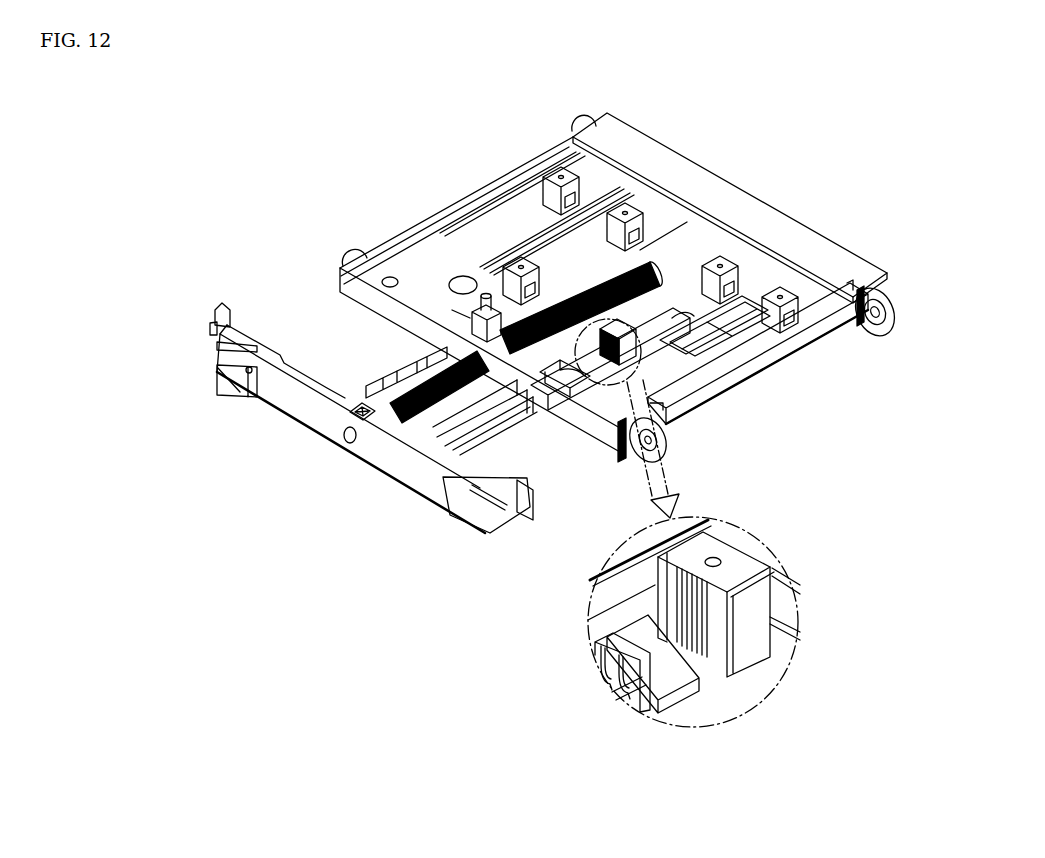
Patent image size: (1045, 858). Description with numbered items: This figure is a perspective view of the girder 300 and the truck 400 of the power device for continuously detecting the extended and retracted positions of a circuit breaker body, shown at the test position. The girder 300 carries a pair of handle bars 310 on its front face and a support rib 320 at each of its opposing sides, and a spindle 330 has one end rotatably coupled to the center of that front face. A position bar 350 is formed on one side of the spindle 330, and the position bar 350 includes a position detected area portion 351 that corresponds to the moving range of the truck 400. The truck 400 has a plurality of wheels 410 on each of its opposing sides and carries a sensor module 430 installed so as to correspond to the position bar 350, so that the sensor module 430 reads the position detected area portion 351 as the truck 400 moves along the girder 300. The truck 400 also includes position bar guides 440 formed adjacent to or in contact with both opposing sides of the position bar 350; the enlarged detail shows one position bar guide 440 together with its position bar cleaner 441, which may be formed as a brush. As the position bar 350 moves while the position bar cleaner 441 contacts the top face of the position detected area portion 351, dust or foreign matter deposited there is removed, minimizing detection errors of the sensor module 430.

The girder 300 is at (290, 402).
The handle bar 310 is at (222, 356).
The support rib 320 is at (213, 322).
The spindle 330 is at (583, 278).
The position bar 350 is at (682, 318).
The position detected area portion 351 is at (718, 643).
The truck 400 is at (773, 365).
The wheel 410 is at (867, 320).
The sensor module 430 is at (558, 398).
The position bar guide 440 is at (710, 543).
The position bar cleaner 441 is at (680, 600).